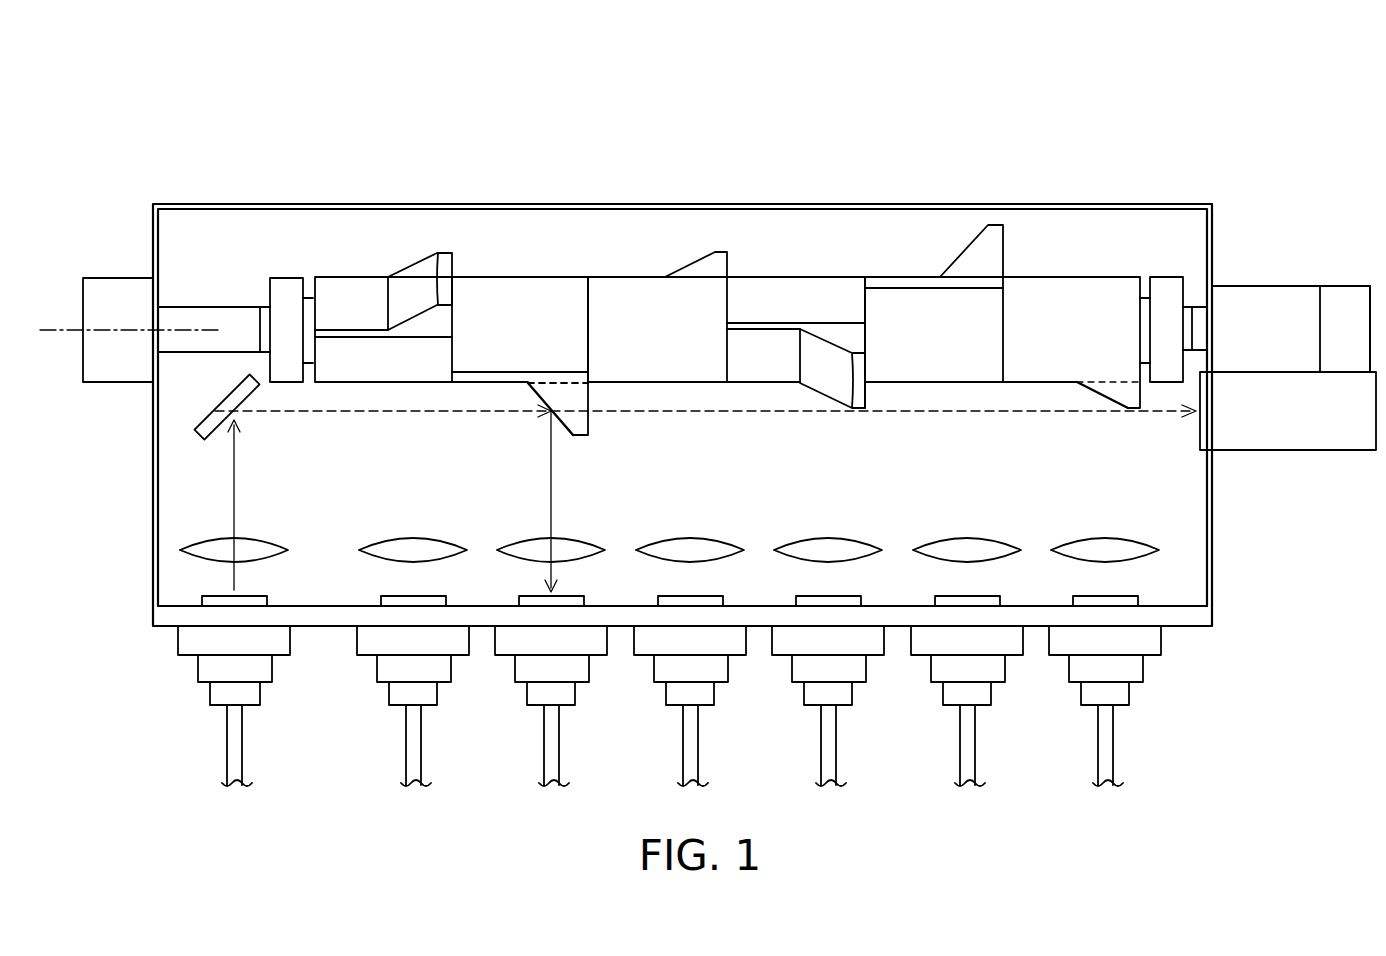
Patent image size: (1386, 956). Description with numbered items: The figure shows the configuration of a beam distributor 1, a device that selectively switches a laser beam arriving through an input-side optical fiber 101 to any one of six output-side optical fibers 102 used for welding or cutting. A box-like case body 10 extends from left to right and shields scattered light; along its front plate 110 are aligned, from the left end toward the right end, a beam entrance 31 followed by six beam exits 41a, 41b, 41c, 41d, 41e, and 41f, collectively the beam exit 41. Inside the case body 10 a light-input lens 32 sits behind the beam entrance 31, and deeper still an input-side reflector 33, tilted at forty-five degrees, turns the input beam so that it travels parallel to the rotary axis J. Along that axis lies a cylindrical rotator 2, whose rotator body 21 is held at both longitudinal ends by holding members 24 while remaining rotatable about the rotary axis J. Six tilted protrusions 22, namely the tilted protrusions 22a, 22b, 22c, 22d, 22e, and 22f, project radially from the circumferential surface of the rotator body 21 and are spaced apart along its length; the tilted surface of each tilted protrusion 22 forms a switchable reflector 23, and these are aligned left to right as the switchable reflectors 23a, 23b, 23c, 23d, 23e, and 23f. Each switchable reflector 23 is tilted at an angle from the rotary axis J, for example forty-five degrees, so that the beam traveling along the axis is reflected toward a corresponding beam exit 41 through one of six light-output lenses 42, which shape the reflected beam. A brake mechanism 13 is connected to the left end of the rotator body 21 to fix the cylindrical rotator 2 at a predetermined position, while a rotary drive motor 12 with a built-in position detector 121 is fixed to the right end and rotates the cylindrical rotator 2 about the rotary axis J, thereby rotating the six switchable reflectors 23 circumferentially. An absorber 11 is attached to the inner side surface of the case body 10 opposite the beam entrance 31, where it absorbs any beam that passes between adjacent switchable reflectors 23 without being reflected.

The beam distributor 1 is at (1184, 186).
The cylindrical rotator 2 is at (786, 268).
The case body 10 is at (1212, 573).
The front plate 110 is at (1183, 628).
The absorber 11 is at (1290, 442).
The rotary drive motor 12 is at (1285, 290).
The position detector 121 is at (1345, 290).
The brake mechanism 13 is at (122, 290).
The rotary axis J is at (70, 331).
The rotator body 21 is at (750, 277).
The tilted protrusion 22 is at (773, 268).
The tilted protrusion 22a is at (438, 270).
The tilted protrusion 22b is at (580, 437).
The tilted protrusion 22c is at (716, 268).
The tilted protrusion 22d is at (858, 355).
The tilted protrusion 22e is at (998, 236).
The tilted protrusion 22f is at (1130, 408).
The switchable reflector 23 is at (727, 250).
The switchable reflector 23a is at (408, 283).
The switchable reflector 23b is at (538, 393).
The switchable reflector 23c is at (687, 263).
The switchable reflector 23d is at (822, 362).
The switchable reflector 23e is at (962, 252).
The switchable reflector 23f is at (1090, 392).
The holding member 24 is at (287, 284).
The beam entrance 31 is at (205, 668).
The light-input lens 32 is at (202, 545).
The input-side reflector 33 is at (212, 412).
The beam exit 41 is at (735, 684).
The beam exit 41a is at (387, 672).
The beam exit 41b is at (525, 672).
The beam exit 41c is at (664, 672).
The beam exit 41d is at (802, 672).
The beam exit 41e is at (941, 672).
The beam exit 41f is at (1079, 672).
The light-output lens 42 is at (380, 552).
The input-side optical fiber 101 is at (234, 750).
The output-side optical fiber 102 is at (406, 768).